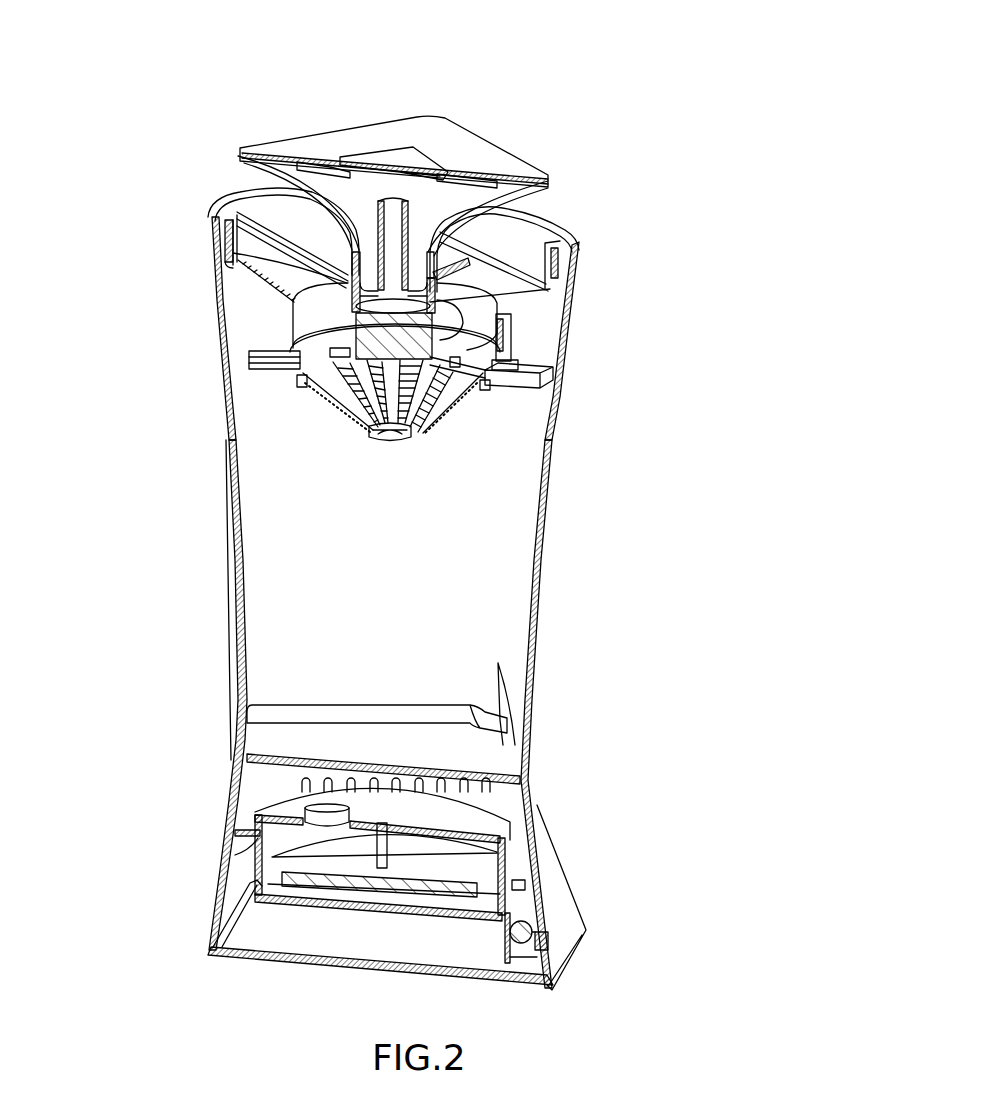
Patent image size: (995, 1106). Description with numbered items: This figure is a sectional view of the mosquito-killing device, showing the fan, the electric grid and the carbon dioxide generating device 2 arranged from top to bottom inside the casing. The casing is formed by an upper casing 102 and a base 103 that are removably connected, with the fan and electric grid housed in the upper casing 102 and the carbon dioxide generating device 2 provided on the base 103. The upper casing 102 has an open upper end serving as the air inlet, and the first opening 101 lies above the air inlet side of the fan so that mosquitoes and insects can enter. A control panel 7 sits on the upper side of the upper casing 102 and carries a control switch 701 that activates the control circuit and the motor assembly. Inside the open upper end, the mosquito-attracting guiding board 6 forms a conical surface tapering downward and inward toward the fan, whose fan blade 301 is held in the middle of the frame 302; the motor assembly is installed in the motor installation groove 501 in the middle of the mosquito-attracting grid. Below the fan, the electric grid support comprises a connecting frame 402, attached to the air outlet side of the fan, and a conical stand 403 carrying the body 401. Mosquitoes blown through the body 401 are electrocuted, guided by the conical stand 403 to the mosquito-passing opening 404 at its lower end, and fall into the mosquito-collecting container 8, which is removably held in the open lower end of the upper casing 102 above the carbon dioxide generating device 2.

The control panel 7 is at (372, 130).
The control switch 701 is at (422, 157).
The first opening 101 is at (573, 228).
The motor installation groove 501 is at (345, 296).
The mosquito-attracting guiding board 6 is at (275, 285).
The fan blade 301 is at (450, 326).
The frame 302 is at (483, 338).
The connecting frame 402 is at (302, 363).
The body 401 is at (480, 392).
The conical stand 403 is at (337, 402).
The mosquito-passing opening 404 is at (370, 438).
The upper casing 102 is at (545, 520).
The mosquito-collecting container 8 is at (290, 745).
The carbon dioxide generating device 2 is at (490, 818).
The base 103 is at (555, 893).